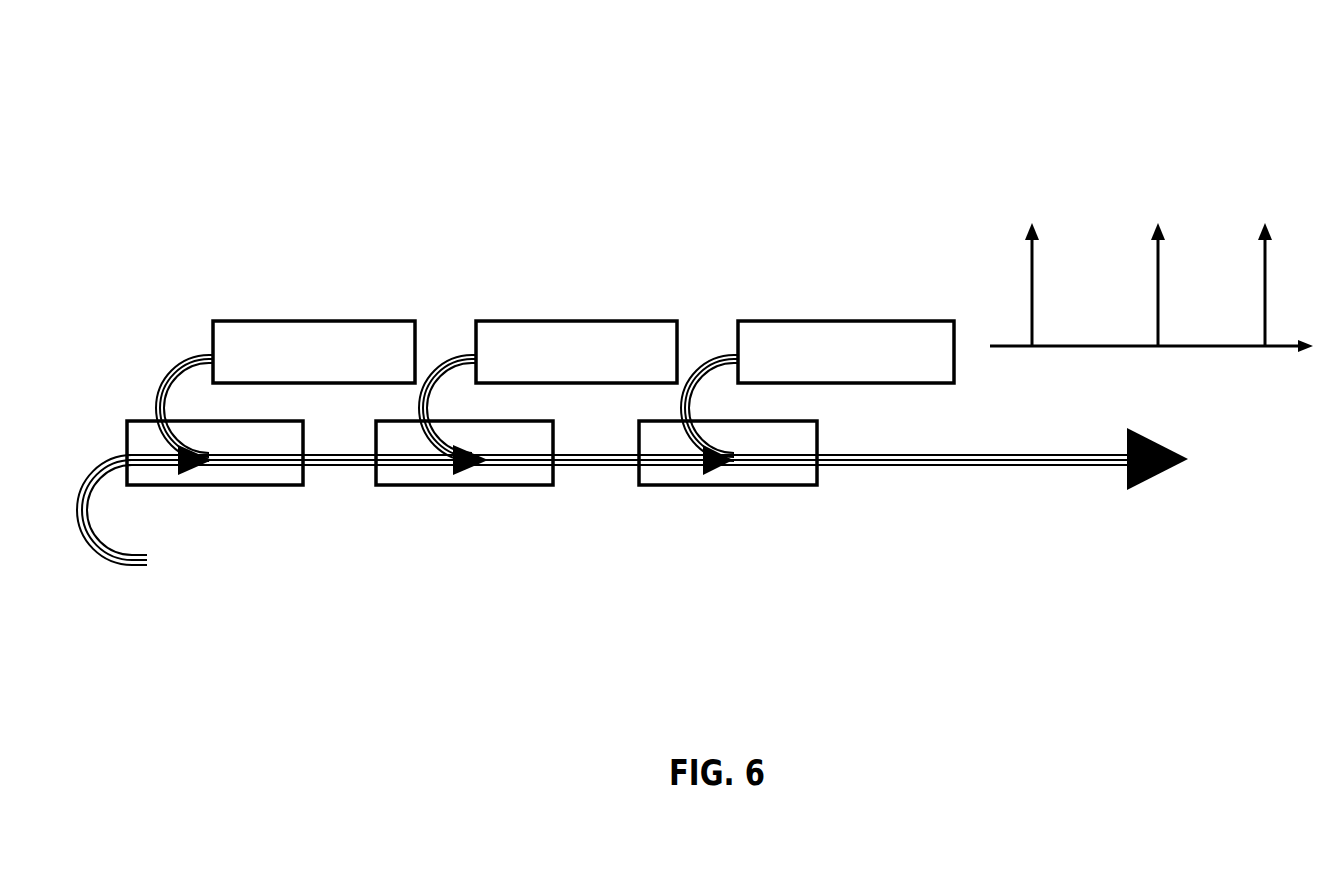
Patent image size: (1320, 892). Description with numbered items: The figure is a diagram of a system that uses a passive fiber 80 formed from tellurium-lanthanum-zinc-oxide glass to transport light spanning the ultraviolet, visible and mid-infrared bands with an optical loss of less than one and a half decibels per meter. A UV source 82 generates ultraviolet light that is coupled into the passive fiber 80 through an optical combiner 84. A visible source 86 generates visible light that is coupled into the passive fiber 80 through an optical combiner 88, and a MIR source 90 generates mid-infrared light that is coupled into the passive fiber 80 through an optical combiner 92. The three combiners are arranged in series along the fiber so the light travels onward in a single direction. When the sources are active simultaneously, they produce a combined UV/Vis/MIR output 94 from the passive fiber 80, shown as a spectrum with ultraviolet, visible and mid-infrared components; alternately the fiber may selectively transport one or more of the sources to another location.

The passive fiber 80 is at (925, 480).
The UV source 82 is at (299, 308).
The optical combiner 84 is at (287, 498).
The visible source 86 is at (560, 308).
The optical combiner 88 is at (524, 498).
The MIR source 90 is at (820, 308).
The optical combiner 92 is at (779, 498).
The combined UV/Vis/MIR output 94 is at (1185, 188).